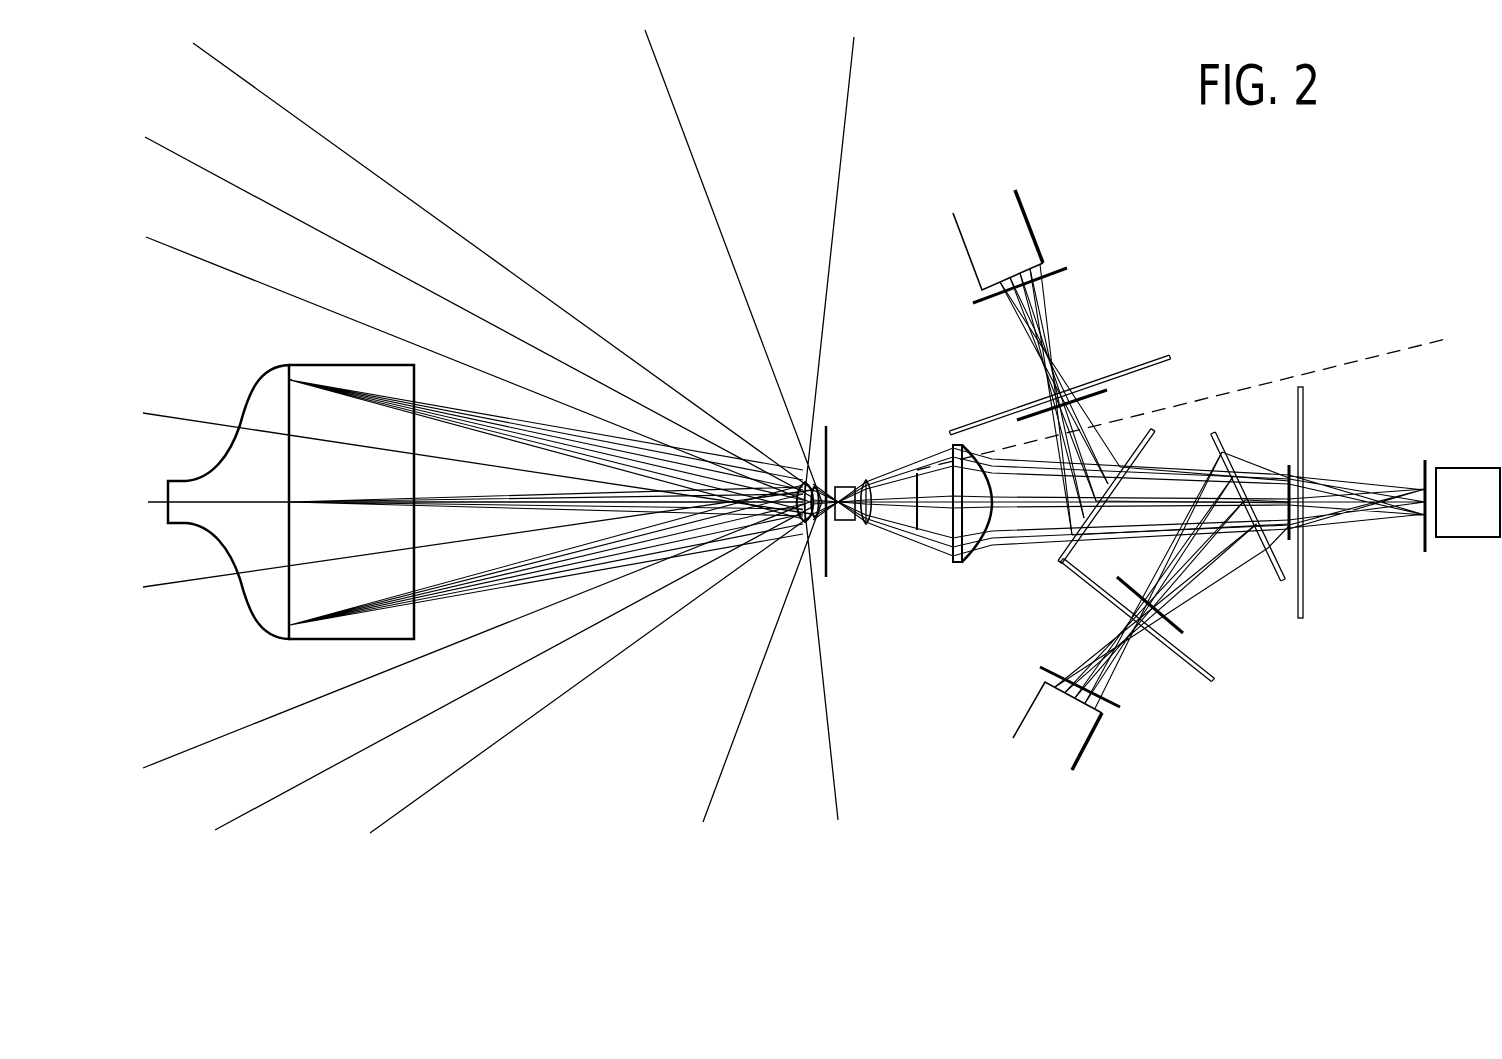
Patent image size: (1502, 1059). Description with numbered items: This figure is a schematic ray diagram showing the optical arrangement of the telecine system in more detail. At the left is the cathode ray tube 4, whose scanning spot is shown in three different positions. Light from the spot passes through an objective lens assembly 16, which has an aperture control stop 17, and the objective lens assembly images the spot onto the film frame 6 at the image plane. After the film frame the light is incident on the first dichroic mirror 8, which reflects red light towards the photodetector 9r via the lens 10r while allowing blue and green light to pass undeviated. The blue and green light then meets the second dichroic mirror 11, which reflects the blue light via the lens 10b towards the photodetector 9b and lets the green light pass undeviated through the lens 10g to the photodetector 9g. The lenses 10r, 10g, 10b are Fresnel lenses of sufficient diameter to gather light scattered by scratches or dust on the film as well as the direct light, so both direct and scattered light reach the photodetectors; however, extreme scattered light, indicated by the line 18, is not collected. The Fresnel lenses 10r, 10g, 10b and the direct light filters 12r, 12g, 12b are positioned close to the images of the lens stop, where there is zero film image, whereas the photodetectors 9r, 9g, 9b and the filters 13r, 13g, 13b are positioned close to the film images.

The cathode ray tube 4 is at (258, 553).
The film frame 6 is at (917, 515).
The first dichroic mirror 8 is at (1150, 432).
The photodetector 9r is at (998, 240).
The photodetector 9g is at (1468, 502).
The photodetector 9b is at (1057, 726).
The lens 10r is at (1168, 357).
The lens 10g is at (1304, 447).
The lens 10b is at (1197, 675).
The second dichroic mirror 11 is at (1280, 560).
The direct light filter 12r is at (1108, 393).
The direct light filter 12g is at (1288, 468).
The direct light filter 12b is at (1183, 632).
The filter 13r is at (1052, 270).
The filter 13g is at (1424, 540).
The filter 13b is at (1120, 705).
The objective lens assembly 16 is at (835, 470).
The aperture control stop 17 is at (826, 566).
The line 18 is at (1354, 352).